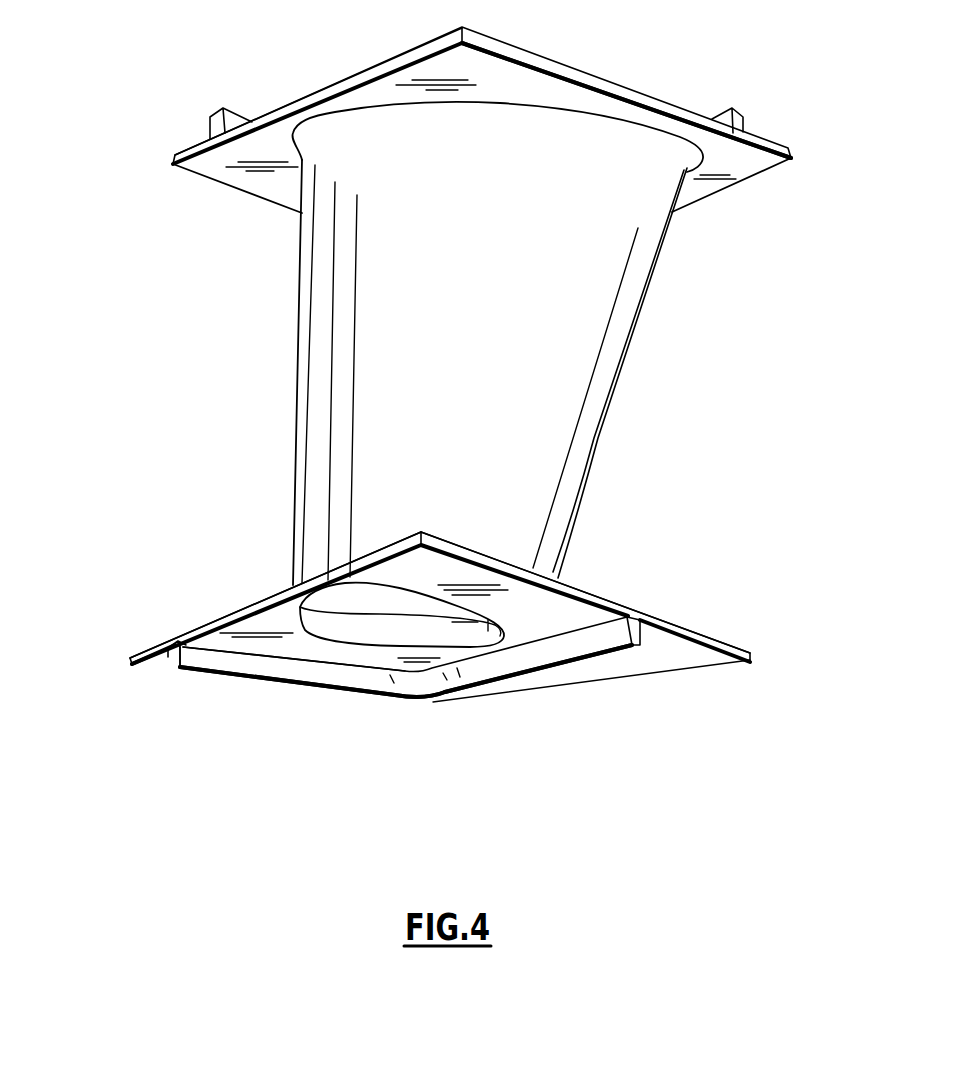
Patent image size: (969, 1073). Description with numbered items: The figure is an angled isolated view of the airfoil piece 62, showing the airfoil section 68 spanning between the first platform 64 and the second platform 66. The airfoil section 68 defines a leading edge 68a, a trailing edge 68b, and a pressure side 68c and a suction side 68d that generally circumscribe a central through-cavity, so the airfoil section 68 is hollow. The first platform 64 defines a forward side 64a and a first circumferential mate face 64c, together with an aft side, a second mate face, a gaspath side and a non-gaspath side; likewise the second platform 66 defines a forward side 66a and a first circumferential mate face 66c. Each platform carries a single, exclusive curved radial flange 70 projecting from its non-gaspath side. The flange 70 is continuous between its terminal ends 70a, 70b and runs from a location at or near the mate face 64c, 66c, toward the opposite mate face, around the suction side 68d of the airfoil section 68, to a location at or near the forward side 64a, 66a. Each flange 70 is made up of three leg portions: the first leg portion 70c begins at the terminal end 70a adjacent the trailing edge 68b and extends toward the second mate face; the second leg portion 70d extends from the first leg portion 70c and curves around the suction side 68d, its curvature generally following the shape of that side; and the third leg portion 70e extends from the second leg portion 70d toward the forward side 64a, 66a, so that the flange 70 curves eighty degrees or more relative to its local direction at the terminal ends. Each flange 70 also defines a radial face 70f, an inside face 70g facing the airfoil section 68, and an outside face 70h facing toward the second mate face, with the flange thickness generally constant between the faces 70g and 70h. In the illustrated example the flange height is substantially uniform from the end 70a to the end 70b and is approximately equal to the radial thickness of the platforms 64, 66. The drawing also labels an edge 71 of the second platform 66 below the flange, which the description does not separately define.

The airfoil piece 62 is at (152, 460).
The first platform 64 is at (646, 103).
The forward side 64a is at (268, 121).
The first circumferential mate face 64c is at (767, 146).
The second platform 66 is at (688, 632).
The forward side 66a is at (205, 624).
The first circumferential mate face 66c is at (577, 593).
The airfoil section 68 is at (524, 353).
The leading edge 68a is at (645, 256).
The trailing edge 68b is at (327, 347).
The pressure side 68c is at (618, 398).
The suction side 68d is at (322, 218).
The curved radial flange 70 is at (723, 96).
The terminal end 70a is at (742, 118).
The terminal end 70b is at (210, 129).
The first leg portion 70c is at (478, 715).
The second leg portion 70d is at (453, 717).
The third leg portion 70e is at (368, 705).
The radial face 70f is at (206, 673).
The inside face 70g is at (288, 663).
The outside face 70h is at (172, 660).
The platform edge 71 is at (433, 702).